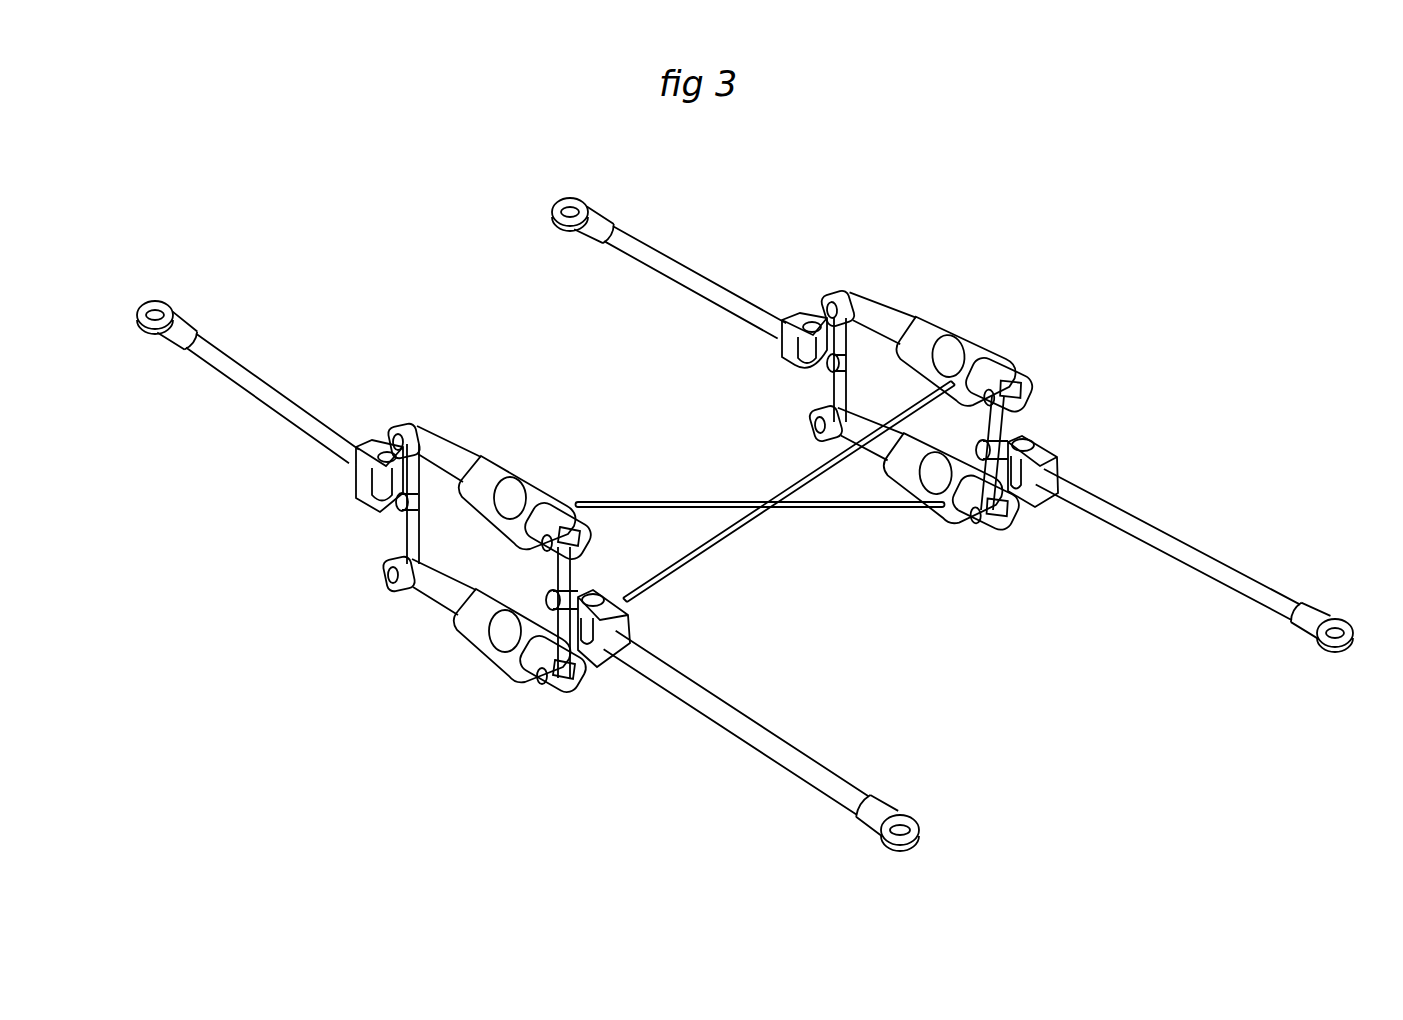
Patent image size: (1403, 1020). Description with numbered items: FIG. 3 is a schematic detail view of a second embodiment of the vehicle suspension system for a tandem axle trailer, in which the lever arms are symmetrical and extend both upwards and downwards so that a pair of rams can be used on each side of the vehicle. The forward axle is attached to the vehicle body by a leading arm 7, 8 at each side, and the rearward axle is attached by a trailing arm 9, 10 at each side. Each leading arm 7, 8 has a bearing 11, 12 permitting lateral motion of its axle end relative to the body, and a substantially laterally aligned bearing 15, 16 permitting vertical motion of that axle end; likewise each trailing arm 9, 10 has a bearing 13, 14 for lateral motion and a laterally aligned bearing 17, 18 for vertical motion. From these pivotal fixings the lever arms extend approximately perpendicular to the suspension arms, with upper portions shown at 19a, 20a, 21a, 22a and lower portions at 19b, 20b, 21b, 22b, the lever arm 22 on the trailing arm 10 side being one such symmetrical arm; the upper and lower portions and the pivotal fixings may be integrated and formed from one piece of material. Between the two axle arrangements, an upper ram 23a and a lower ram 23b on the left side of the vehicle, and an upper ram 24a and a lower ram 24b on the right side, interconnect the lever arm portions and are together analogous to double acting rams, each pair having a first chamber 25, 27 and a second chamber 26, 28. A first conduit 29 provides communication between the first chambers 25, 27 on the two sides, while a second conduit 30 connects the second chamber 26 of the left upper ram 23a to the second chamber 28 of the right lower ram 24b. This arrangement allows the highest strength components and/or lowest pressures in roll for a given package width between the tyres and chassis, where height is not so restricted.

The leading arm 7 is at (258, 390).
The leading arm 8 is at (680, 275).
The trailing arm 9 is at (1200, 563).
The trailing arm 10 is at (777, 747).
The bearing 11 is at (377, 482).
The bearing 12 is at (807, 343).
The bearing 13 is at (1040, 442).
The bearing 14 is at (627, 602).
The laterally aligned bearing 15 is at (400, 512).
The laterally aligned bearing 16 is at (827, 372).
The laterally aligned bearing 17 is at (1000, 440).
The laterally aligned bearing 18 is at (570, 593).
The upward lever arm portion 19a is at (368, 502).
The downward lever arm portion 19b is at (422, 530).
The upward lever arm portion 20a is at (823, 300).
The downward lever arm portion 20b is at (833, 390).
The upward lever arm portion 21a is at (1007, 417).
The downward lever arm portion 21b is at (1003, 500).
The lever arm 22 is at (610, 595).
The upward lever arm portion 22a is at (570, 570).
The downward lever arm portion 22b is at (567, 672).
The upper ram 23a is at (491, 453).
The lower ram 23b is at (486, 655).
The upper ram 24a is at (929, 337).
The lower ram 24b is at (917, 499).
The first chamber 25 is at (458, 653).
The second chamber 26 is at (506, 445).
The first chamber 27 is at (935, 322).
The second chamber 28 is at (947, 533).
The first conduit 29 is at (737, 537).
The second conduit 30 is at (720, 500).